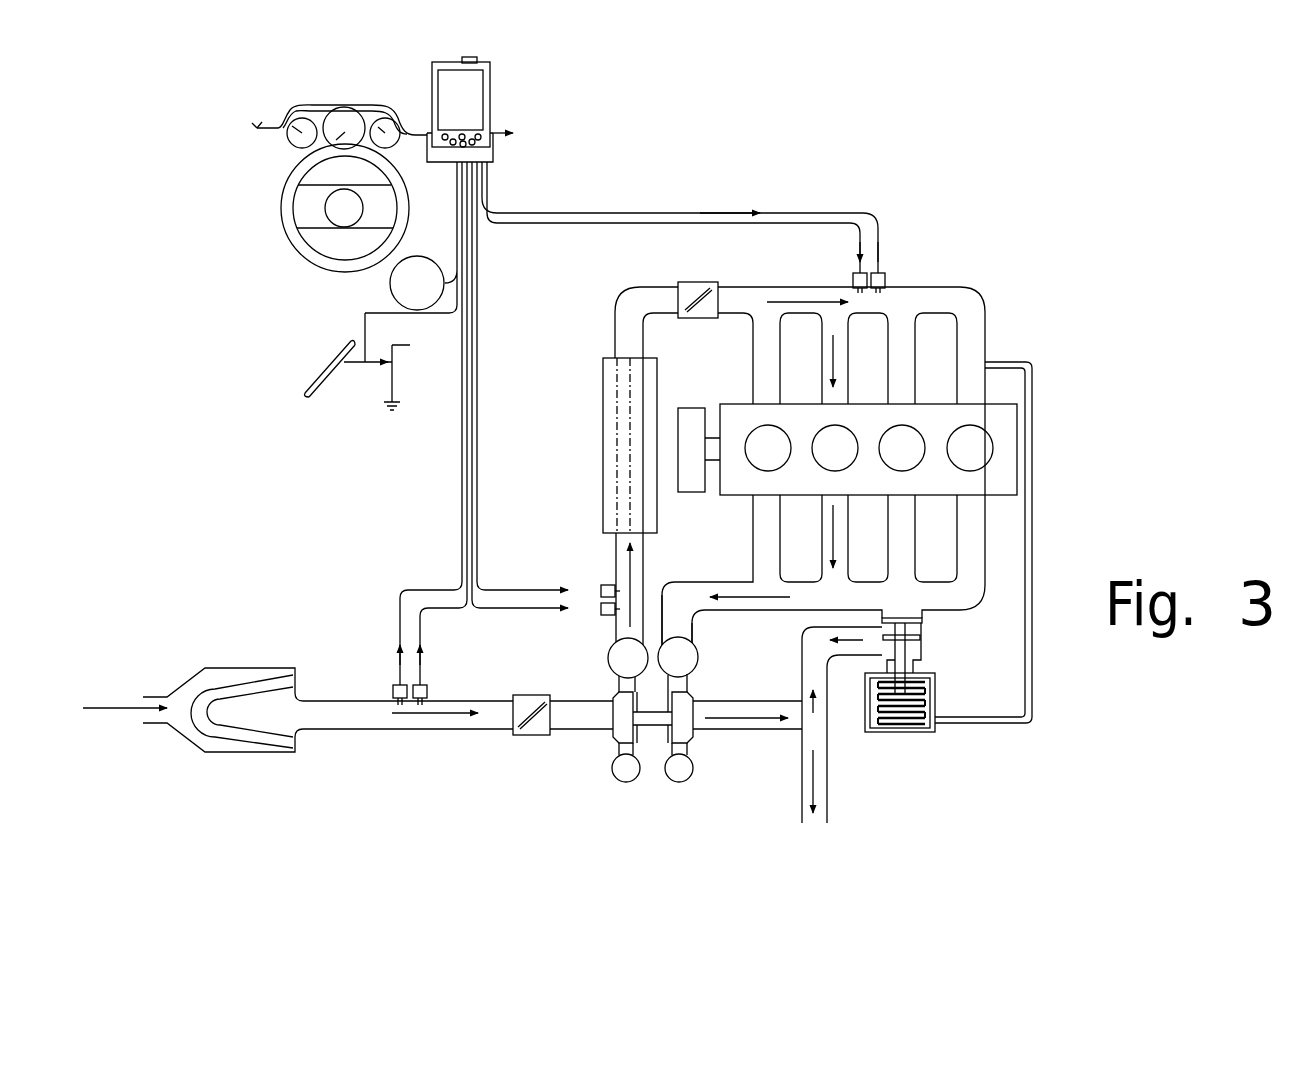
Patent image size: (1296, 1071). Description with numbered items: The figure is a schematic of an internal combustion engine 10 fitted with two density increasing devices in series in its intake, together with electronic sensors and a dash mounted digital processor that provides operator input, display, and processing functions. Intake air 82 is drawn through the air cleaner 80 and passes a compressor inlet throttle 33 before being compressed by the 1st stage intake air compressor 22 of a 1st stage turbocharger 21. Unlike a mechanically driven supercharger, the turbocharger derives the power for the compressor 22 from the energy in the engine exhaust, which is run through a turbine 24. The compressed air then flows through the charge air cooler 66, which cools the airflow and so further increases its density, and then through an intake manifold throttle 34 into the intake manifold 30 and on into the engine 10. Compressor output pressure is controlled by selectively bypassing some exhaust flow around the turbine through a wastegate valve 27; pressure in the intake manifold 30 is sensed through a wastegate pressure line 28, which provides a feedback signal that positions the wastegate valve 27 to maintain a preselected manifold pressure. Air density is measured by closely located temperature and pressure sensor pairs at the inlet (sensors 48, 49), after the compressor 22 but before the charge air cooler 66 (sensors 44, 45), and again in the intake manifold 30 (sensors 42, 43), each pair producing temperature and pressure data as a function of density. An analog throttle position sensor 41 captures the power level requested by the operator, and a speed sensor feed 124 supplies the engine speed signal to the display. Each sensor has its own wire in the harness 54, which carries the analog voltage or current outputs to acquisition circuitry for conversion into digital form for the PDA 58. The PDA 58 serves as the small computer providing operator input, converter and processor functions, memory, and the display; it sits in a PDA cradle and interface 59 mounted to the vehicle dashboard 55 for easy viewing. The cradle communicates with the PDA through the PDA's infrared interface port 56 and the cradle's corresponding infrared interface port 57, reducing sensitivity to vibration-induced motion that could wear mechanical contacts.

The internal combustion engine 10 is at (748, 478).
The 1st stage turbocharger 21 is at (652, 728).
The 1st stage intake air compressor 22 is at (637, 777).
The turbine 24 is at (680, 662).
The wastegate valve 27 is at (915, 733).
The wastegate pressure line 28 is at (1032, 675).
The intake manifold 30 is at (962, 305).
The compressor inlet throttle 33 is at (532, 715).
The intake manifold throttle 34 is at (698, 300).
The analog throttle position sensor 41 is at (322, 370).
The intake manifold density sensor 42 is at (857, 275).
The intake manifold density sensor 43 is at (883, 277).
The post-compressor density sensor 44 is at (605, 587).
The post-compressor density sensor 45 is at (605, 612).
The inlet density sensor 48 is at (418, 688).
The inlet density sensor 49 is at (392, 688).
The harness 54 is at (488, 192).
The vehicle dashboard 55 is at (365, 118).
The PDA infrared interface port 56 is at (433, 62).
The PDA cradle infrared interface port 57 is at (470, 56).
The PDA 58 is at (457, 92).
The PDA cradle and interface 59 is at (485, 153).
The charge air cooler 66 is at (598, 392).
The air cleaner 80 is at (233, 758).
The intake air 82 is at (102, 722).
The speed sensor feed 124 is at (389, 283).